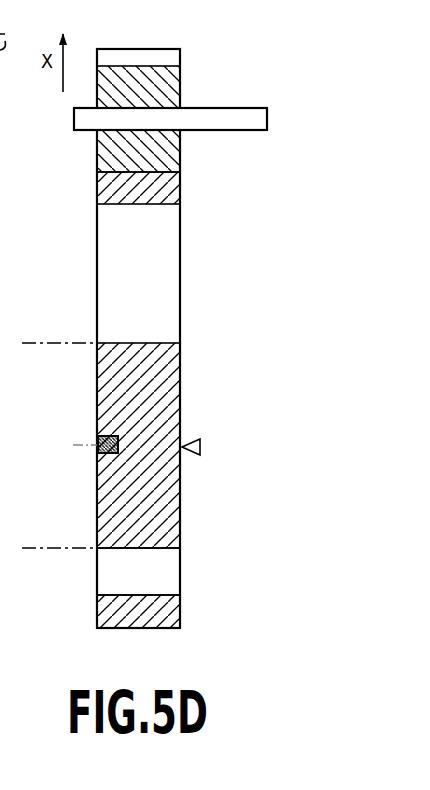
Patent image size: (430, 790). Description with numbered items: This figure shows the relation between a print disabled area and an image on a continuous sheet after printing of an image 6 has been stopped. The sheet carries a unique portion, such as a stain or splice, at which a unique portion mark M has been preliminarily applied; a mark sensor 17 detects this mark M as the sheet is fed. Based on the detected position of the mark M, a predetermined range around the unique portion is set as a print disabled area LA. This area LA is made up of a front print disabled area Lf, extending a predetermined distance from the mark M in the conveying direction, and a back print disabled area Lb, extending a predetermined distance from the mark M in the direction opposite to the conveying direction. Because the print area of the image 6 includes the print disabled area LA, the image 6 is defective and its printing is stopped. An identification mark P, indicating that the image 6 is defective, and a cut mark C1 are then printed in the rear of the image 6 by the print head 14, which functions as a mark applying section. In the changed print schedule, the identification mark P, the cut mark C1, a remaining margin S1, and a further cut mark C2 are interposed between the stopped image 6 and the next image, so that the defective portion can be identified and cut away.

The image 6 is at (172, 81).
The print head 14 is at (249, 107).
The mark sensor 17 is at (200, 447).
The identification mark P is at (176, 152).
The cut mark C1 is at (176, 191).
The cut mark C2 is at (178, 607).
The remaining margin S1 is at (172, 565).
The unique portion mark M is at (110, 435).
The print disabled area LA is at (38, 344).
The front print disabled area Lf is at (85, 344).
The back print disabled area Lb is at (85, 446).